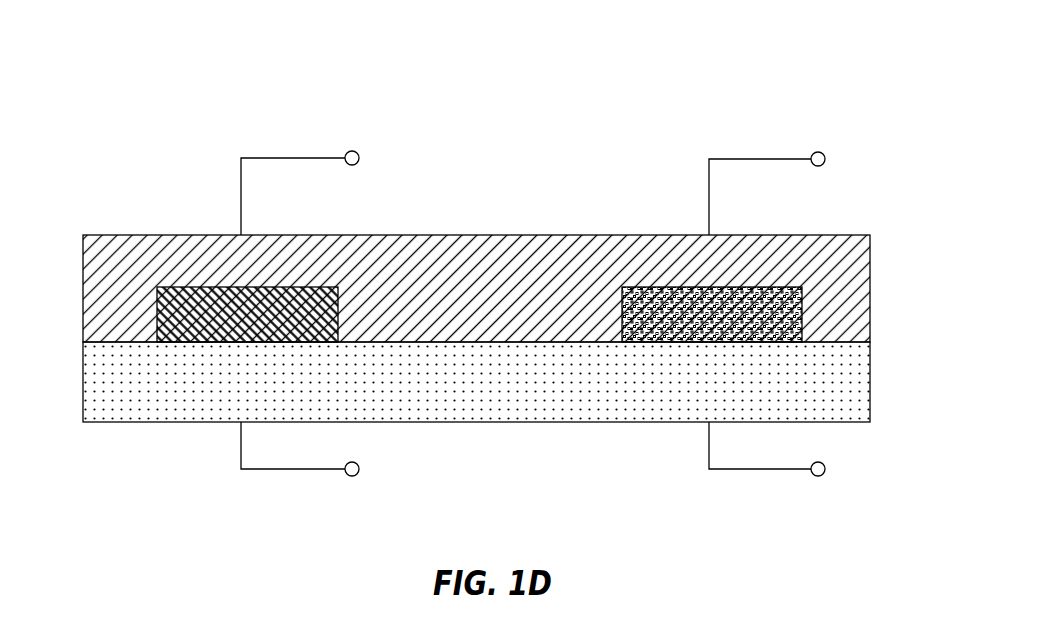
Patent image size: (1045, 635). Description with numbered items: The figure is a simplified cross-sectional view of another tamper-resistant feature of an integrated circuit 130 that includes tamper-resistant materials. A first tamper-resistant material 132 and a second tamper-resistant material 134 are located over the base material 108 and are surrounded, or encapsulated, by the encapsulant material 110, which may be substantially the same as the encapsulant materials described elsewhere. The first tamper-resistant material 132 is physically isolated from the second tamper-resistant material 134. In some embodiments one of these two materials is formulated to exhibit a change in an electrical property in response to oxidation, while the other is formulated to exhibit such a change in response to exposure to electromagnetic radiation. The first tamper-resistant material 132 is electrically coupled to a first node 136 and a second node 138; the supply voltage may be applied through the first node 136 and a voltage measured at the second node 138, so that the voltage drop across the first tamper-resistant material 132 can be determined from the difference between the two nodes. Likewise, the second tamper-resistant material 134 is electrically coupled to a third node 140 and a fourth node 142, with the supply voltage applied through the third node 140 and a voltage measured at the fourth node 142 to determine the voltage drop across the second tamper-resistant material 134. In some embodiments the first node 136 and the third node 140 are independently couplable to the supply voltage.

The integrated circuit 130 is at (193, 118).
The encapsulant material 110 is at (855, 262).
The base material 108 is at (852, 384).
The first tamper-resistant material 132 is at (172, 305).
The second tamper-resistant material 134 is at (795, 315).
The first node 136 is at (354, 477).
The second node 138 is at (353, 151).
The third node 140 is at (821, 477).
The fourth node 142 is at (821, 152).